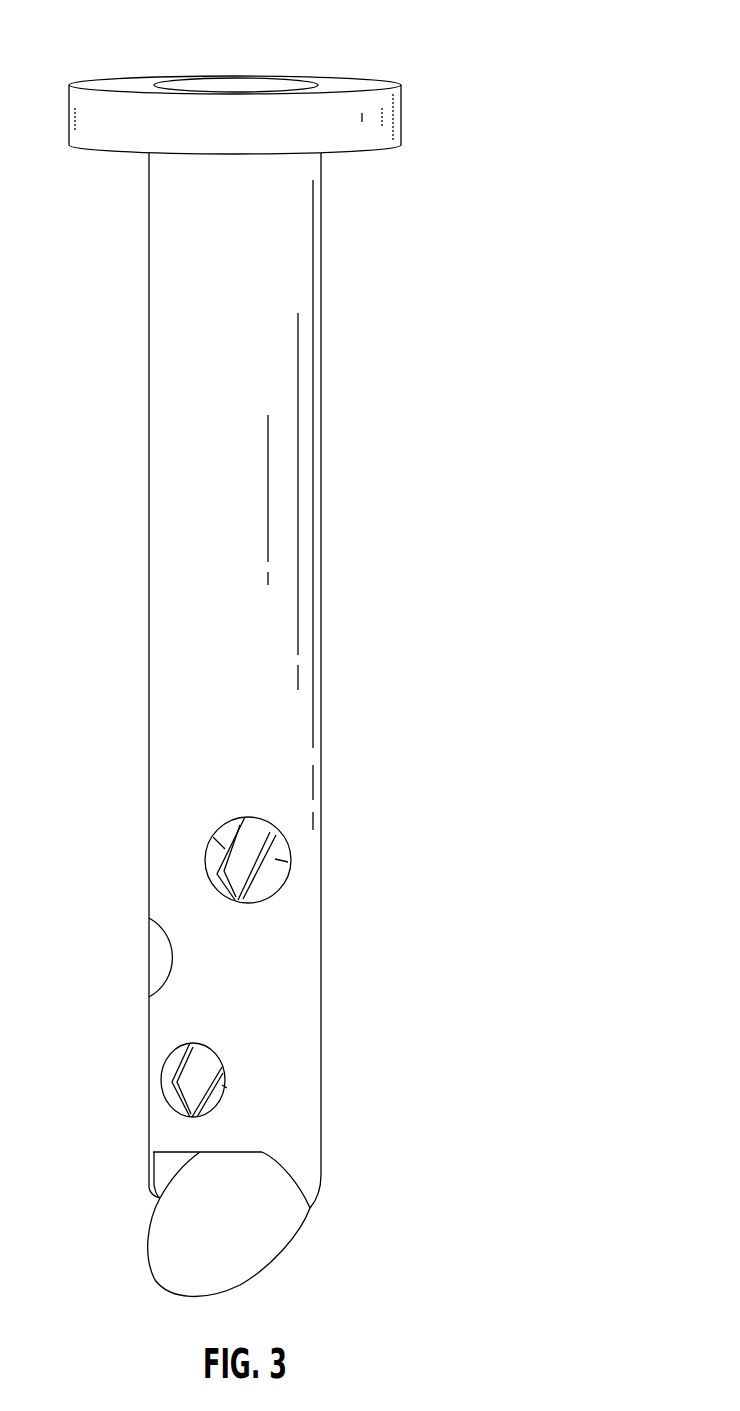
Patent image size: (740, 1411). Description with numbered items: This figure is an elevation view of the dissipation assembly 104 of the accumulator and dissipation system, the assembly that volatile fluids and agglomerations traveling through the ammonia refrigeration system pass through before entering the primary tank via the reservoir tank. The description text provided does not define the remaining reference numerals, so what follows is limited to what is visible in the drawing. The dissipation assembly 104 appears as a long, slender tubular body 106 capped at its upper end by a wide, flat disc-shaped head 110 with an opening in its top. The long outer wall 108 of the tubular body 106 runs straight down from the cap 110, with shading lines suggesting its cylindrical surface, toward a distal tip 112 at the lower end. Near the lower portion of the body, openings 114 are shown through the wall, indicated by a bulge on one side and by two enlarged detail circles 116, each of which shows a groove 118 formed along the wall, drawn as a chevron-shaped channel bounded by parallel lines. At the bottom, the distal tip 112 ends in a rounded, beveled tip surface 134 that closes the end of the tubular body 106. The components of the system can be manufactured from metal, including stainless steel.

The dissipation assembly 104 is at (390, 290).
The tubular body 106 is at (105, 508).
The outer wall 108 is at (172, 322).
The cap 110 is at (301, 40).
The distal tip 112 is at (112, 1246).
The openings 114 is at (223, 1097).
The detail view 116 is at (229, 798).
The groove 118 is at (242, 862).
The beveled tip surface 134 is at (267, 1243).